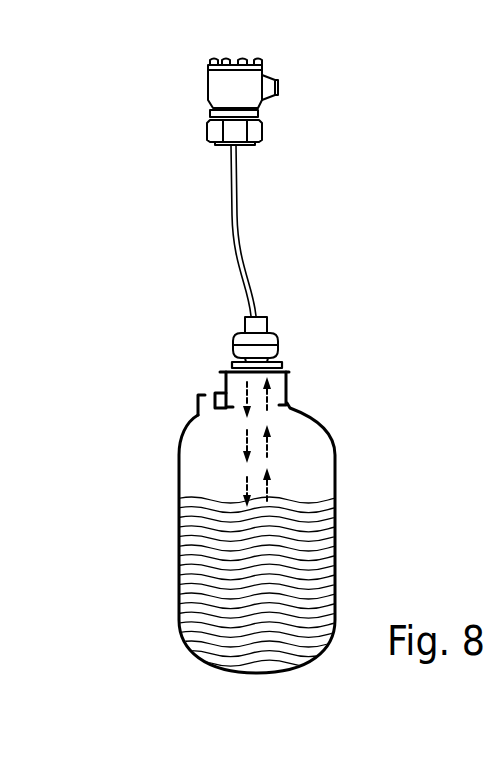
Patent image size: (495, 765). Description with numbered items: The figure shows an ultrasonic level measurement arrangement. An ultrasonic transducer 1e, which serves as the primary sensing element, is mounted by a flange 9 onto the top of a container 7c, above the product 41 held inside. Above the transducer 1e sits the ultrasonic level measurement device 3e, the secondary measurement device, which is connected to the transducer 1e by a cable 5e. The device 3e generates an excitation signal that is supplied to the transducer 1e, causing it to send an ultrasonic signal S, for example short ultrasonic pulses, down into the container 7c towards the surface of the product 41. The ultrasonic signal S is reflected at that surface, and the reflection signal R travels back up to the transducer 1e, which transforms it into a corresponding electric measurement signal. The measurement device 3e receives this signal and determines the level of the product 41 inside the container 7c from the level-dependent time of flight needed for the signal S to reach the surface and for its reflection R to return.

The ultrasonic level measurement device 3e is at (210, 92).
The cable 5e is at (237, 218).
The ultrasonic transducer 1e is at (233, 333).
The flange 9 is at (235, 365).
The container 7c is at (322, 416).
The ultrasonic signal S is at (247, 438).
The reflection signal R is at (267, 440).
The product 41 is at (225, 522).